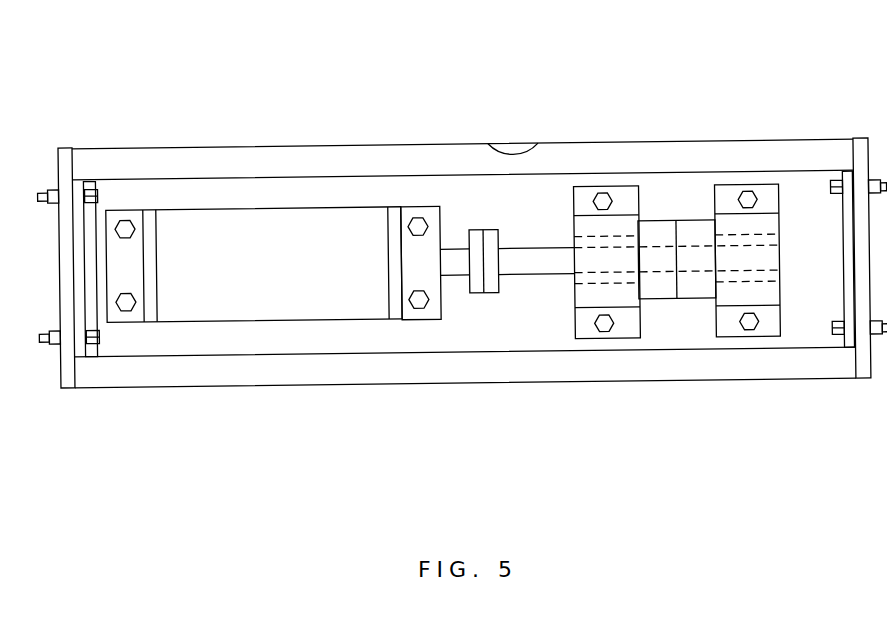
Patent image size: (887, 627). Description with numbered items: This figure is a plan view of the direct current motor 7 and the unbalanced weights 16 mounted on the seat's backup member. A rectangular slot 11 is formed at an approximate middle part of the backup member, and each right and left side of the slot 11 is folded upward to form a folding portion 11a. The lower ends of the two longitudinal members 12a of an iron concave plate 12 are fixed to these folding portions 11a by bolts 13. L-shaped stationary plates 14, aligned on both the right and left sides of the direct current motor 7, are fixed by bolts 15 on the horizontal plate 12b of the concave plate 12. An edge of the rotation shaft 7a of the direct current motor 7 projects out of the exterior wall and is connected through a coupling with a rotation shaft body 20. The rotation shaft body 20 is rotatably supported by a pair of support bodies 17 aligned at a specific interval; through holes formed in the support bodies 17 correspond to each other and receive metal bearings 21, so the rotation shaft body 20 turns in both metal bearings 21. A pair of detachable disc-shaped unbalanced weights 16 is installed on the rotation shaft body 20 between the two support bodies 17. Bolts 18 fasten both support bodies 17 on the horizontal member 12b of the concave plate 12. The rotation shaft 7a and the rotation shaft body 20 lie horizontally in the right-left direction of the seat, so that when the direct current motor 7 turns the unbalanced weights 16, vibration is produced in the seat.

The direct current motor 7 is at (322, 240).
The rotation shaft 7a is at (452, 258).
The rectangular slot 11 is at (538, 142).
The folding portion 11a is at (68, 148).
The concave plate 12 is at (260, 190).
The longitudinal member 12a is at (73, 257).
The horizontal plate 12b is at (318, 347).
The bolt 13 is at (95, 192).
The L-shaped stationary plate 14 is at (148, 312).
The bolt 15 is at (125, 228).
The unbalanced weight 16 is at (695, 233).
The support body 17 is at (625, 195).
The bolt 18 is at (742, 332).
The rotation shaft body 20 is at (545, 262).
The metal bearing 21 is at (580, 297).